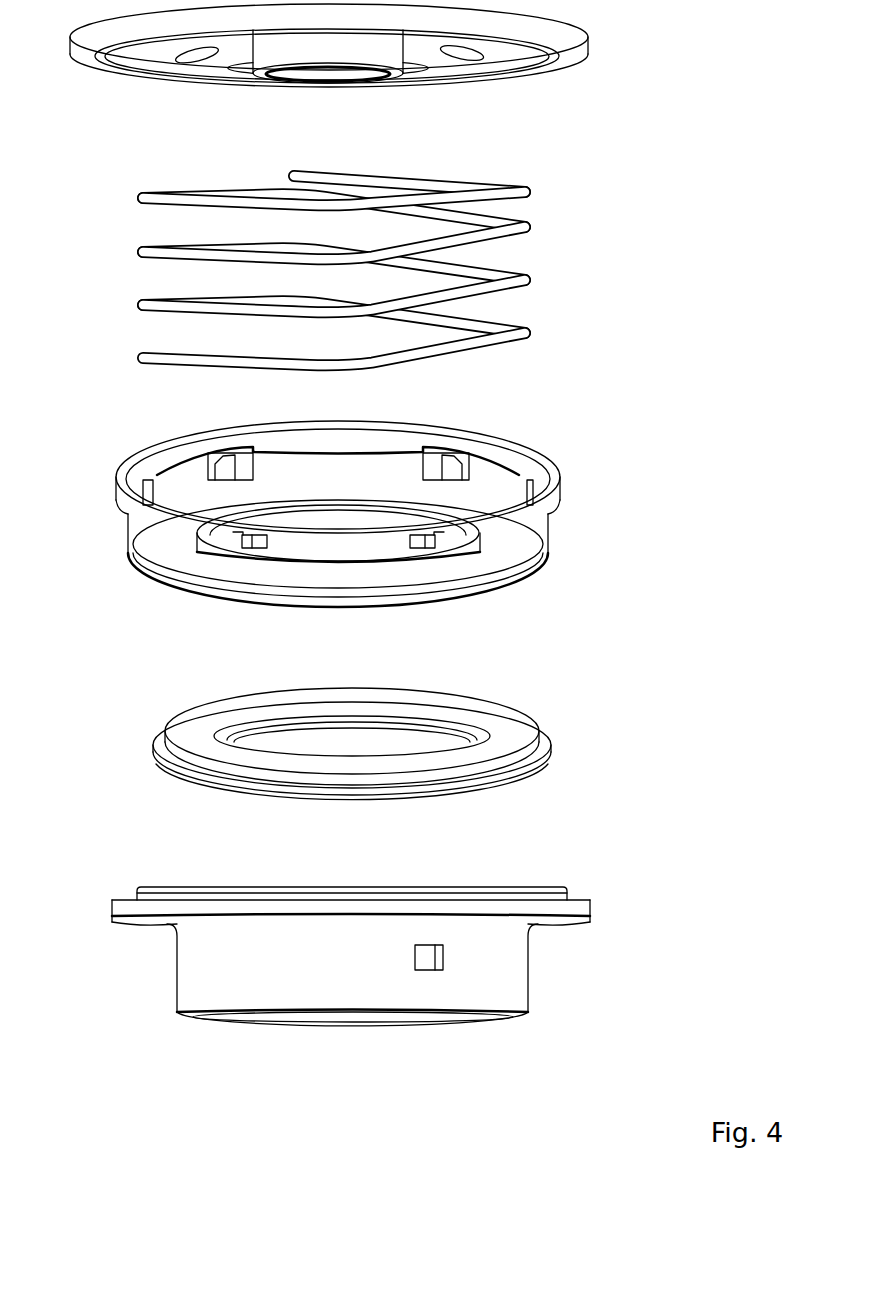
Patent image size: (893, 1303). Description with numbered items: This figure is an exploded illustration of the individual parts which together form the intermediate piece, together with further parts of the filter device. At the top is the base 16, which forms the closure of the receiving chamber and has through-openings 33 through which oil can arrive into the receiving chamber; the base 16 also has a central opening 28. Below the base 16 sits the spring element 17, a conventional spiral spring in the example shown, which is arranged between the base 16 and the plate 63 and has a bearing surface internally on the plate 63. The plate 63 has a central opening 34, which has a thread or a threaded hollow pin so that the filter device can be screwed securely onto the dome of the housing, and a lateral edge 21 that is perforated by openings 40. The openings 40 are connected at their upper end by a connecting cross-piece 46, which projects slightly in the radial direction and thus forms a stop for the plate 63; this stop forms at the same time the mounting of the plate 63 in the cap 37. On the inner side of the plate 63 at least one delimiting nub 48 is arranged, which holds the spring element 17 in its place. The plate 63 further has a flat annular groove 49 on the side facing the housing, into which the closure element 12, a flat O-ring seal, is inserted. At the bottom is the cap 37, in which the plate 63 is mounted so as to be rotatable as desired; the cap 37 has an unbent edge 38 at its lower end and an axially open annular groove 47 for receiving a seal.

The base 16 is at (395, 74).
The central opening 28 is at (343, 75).
The through-openings 33 is at (463, 55).
The spring element 17 is at (534, 278).
The plate 63 is at (332, 521).
The connecting cross-piece 46 is at (513, 455).
The delimiting nub 48 is at (470, 473).
The openings 40 is at (510, 485).
The lateral edge 21 is at (542, 512).
The annular groove 49 is at (180, 550).
The central opening 34 is at (340, 545).
The closure element 12 is at (548, 750).
The cap 37 is at (380, 995).
The annular groove 47 is at (160, 923).
The unbent edge 38 is at (513, 1017).